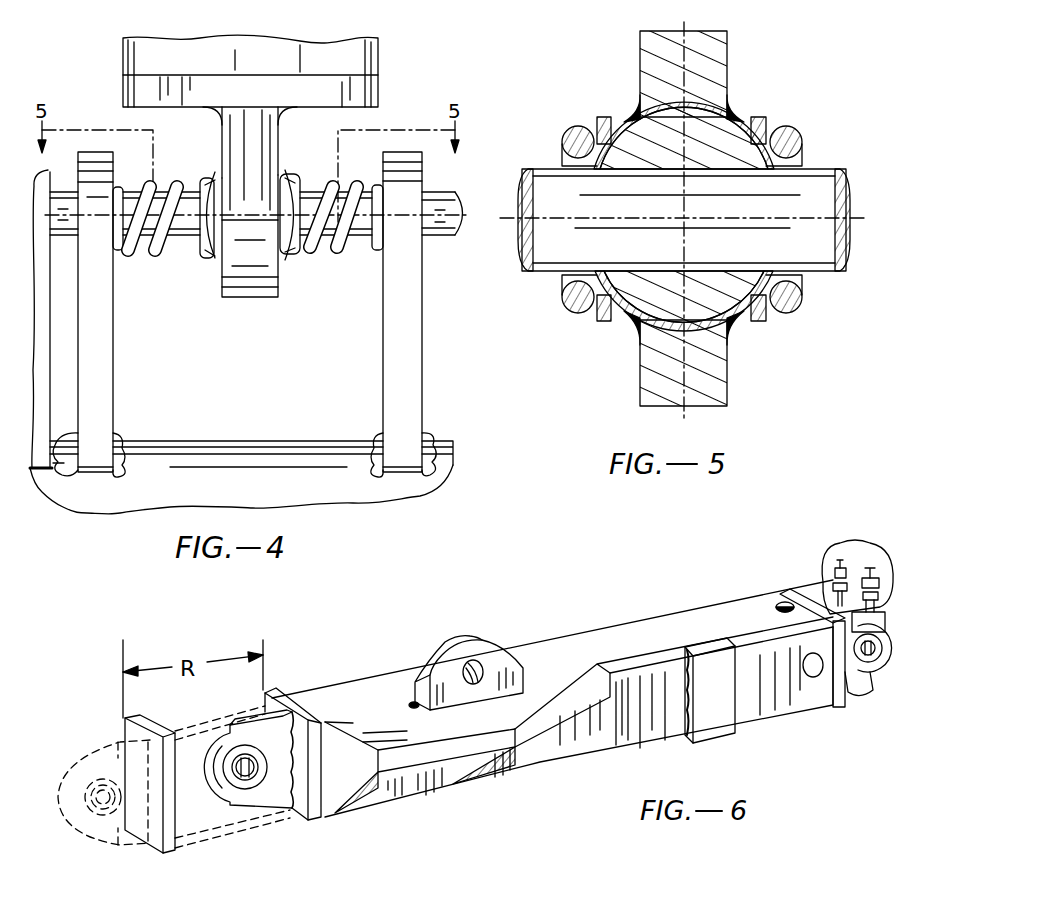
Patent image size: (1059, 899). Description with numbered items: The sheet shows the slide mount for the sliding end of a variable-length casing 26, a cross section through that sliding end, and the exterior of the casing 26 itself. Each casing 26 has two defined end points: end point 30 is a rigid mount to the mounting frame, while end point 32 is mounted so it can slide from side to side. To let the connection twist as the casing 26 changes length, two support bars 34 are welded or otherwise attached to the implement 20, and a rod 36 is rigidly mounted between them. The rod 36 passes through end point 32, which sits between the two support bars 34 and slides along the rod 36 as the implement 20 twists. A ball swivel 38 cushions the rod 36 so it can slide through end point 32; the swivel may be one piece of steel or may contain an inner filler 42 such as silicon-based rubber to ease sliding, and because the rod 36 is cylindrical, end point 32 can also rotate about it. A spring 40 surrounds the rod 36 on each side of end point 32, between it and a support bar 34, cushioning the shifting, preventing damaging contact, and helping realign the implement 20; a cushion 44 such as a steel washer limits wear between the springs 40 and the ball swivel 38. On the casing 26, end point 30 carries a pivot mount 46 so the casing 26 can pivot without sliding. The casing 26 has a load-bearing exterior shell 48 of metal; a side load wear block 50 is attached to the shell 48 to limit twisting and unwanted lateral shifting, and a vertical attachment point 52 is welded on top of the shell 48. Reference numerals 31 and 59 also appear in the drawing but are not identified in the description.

In FIG. 4, the implement 20 is at (360, 499).
In FIG. 4, the casing 26 is at (127, 60).
In FIG. 6, the casing 26 is at (580, 629).
In FIG. 6, the end point 30 is at (852, 694).
In FIG. 4, the spring assembly 31 is at (338, 185).
In FIG. 4, the end point 32 is at (258, 292).
In FIG. 5, the end point 32 is at (714, 370).
In FIG. 6, the end point 32 is at (247, 775).
In FIG. 4, the support bar 34 is at (100, 340).
In FIG. 4, the rod 36 is at (440, 240).
In FIG. 5, the rod 36 is at (832, 191).
In FIG. 4, the ball swivel 38 is at (283, 170).
In FIG. 5, the ball swivel 38 is at (757, 118).
In FIG. 4, the spring 40 is at (145, 262).
In FIG. 5, the spring 40 is at (576, 126).
In FIG. 5, the inner filler 42 is at (733, 142).
In FIG. 5, the cushion 44 is at (606, 322).
In FIG. 6, the pivot mount 46 is at (880, 650).
In FIG. 6, the exterior shell 48 is at (677, 627).
In FIG. 6, the side load wear block 50 is at (720, 723).
In FIG. 6, the vertical attachment point 52 is at (438, 648).
In FIG. 6, the fasteners 59 is at (858, 545).